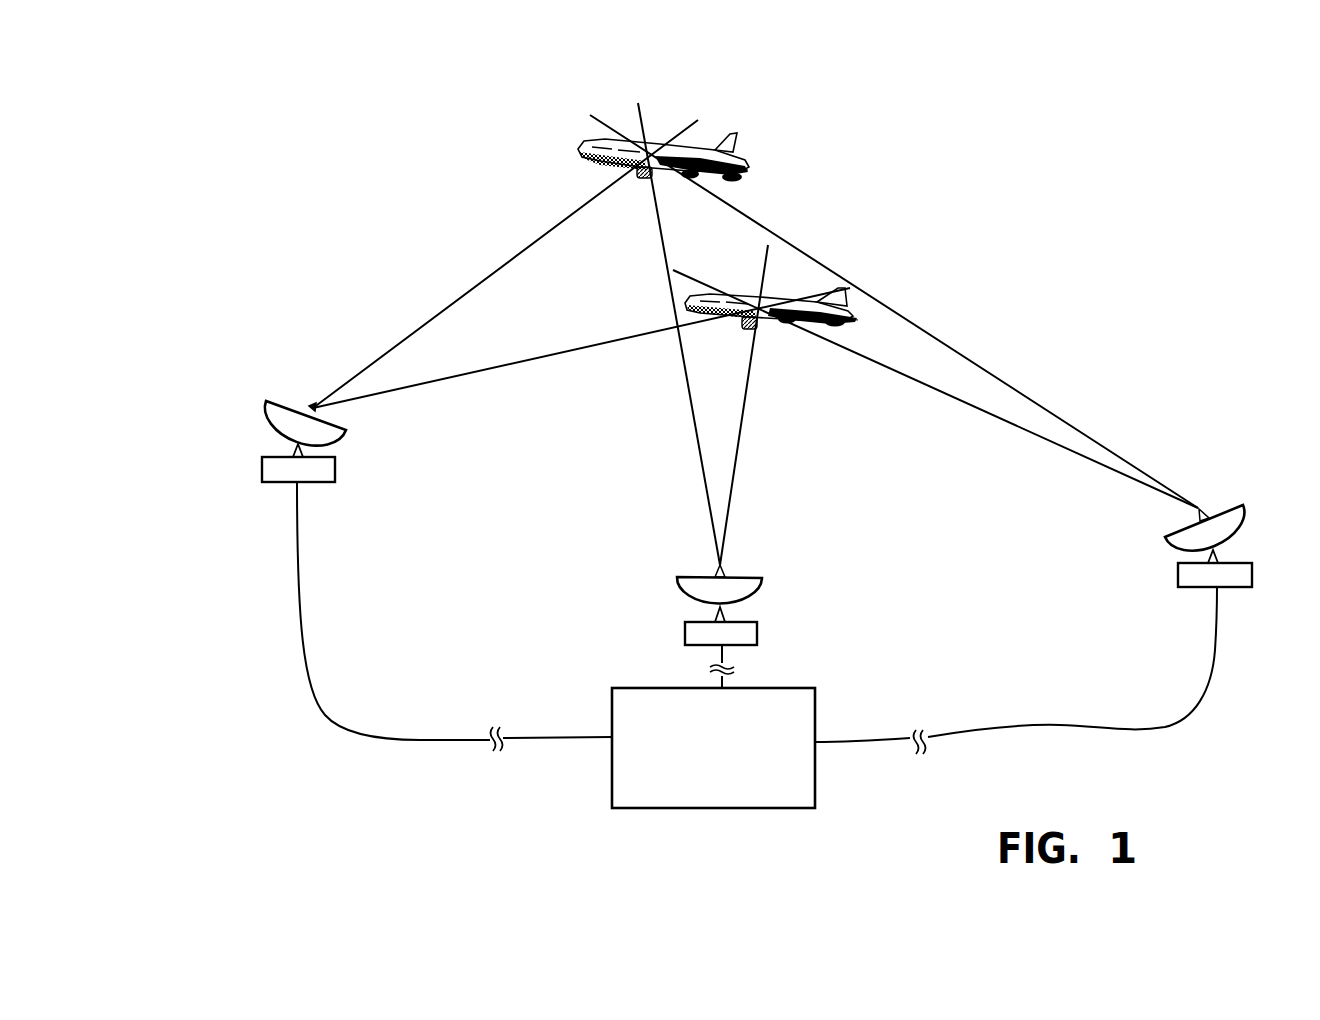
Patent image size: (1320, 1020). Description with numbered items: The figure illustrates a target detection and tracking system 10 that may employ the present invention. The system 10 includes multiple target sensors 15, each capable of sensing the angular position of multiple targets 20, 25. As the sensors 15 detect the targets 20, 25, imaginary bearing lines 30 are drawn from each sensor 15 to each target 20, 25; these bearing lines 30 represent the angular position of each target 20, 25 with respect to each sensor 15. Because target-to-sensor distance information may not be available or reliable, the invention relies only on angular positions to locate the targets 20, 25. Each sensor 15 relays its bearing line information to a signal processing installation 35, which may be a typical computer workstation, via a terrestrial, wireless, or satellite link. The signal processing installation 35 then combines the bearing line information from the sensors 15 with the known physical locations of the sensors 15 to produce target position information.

The target detection and tracking system 10 is at (334, 730).
The target sensor 15 is at (262, 472).
The target 20 is at (742, 167).
The target 25 is at (860, 312).
The bearing line 30 is at (392, 349).
The signal processing installation 35 is at (628, 688).